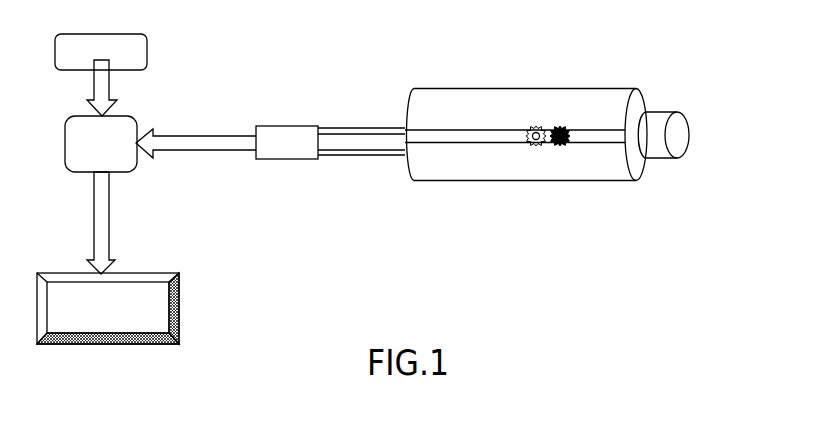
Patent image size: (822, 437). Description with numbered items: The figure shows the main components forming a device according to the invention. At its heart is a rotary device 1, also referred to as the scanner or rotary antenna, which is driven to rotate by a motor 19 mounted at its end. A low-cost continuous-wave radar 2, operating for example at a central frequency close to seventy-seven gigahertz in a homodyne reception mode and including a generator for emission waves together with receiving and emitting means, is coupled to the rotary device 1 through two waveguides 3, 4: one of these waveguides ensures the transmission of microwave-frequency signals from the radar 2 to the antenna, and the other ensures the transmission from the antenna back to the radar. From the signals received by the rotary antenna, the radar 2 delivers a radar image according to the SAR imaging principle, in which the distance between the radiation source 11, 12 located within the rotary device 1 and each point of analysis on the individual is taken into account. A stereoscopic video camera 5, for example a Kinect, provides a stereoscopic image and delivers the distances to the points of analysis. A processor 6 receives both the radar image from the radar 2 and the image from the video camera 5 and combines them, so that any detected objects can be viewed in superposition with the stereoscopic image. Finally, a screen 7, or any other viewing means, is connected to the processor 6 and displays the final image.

The rotary device 1 is at (562, 198).
The continuous-wave radar 2 is at (282, 126).
The waveguide 3 is at (338, 156).
The waveguide 4 is at (355, 127).
The stereoscopic video camera 5 is at (148, 49).
The processor 6 is at (65, 143).
The screen 7 is at (180, 298).
The radiation source 11 is at (535, 128).
The radiation source 12 is at (567, 128).
The motor 19 is at (686, 117).